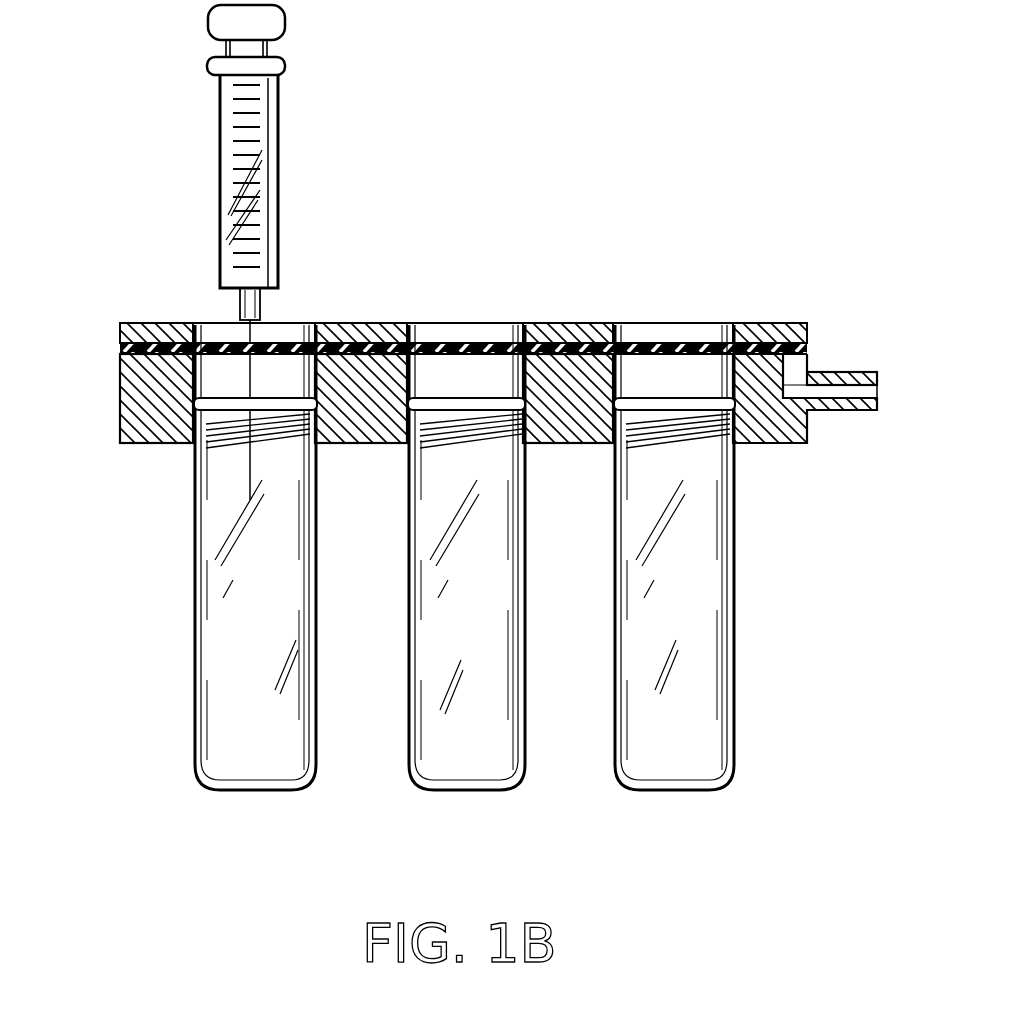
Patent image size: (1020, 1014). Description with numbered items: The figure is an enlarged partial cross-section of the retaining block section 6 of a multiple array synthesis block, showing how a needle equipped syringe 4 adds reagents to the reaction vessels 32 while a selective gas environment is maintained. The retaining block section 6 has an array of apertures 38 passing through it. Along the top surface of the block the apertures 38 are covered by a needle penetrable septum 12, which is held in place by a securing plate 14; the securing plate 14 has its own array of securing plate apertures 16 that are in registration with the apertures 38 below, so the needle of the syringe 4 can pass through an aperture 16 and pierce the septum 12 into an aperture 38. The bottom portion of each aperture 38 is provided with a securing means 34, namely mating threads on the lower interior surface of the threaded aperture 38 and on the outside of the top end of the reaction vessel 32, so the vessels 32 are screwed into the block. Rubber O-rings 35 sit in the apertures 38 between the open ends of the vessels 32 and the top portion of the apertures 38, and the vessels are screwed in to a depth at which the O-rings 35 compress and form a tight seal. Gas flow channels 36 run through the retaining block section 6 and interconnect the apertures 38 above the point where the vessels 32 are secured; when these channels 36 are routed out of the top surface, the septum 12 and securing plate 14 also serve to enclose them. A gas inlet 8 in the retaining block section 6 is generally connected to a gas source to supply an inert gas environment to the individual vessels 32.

The needle equipped syringe 4 is at (318, 122).
The retaining block section 6 is at (120, 390).
The retaining block section gas or liquid inlet 8 is at (877, 378).
The needle penetrable septum 12 is at (805, 347).
The securing plate 14 is at (778, 323).
The securing plate apertures 16 is at (296, 332).
The reaction vessels 32 is at (279, 770).
The securing means 34 is at (222, 435).
The rubber O-rings 35 is at (216, 408).
The gas flow channels 36 is at (816, 394).
The apertures 38 is at (308, 368).